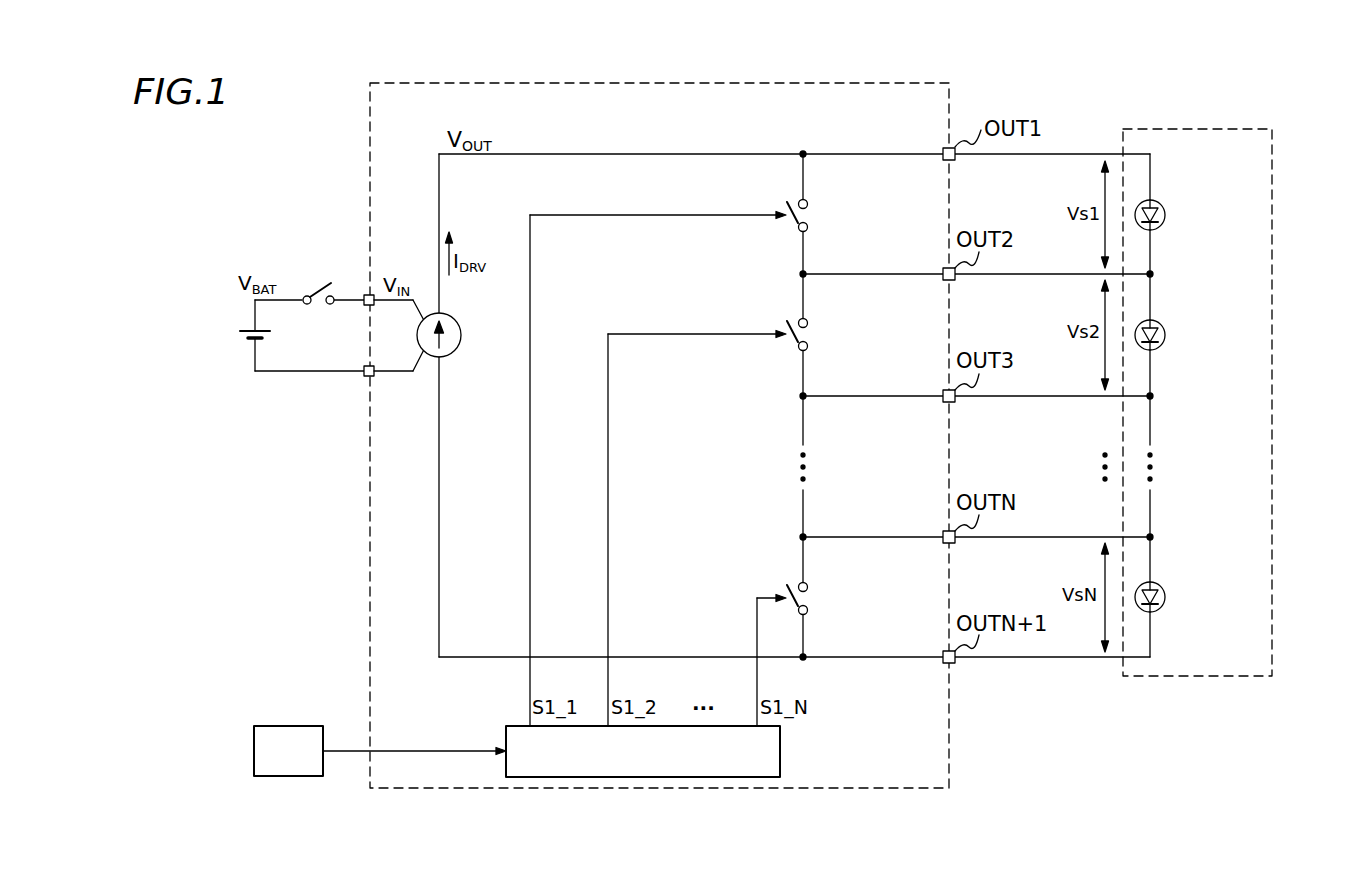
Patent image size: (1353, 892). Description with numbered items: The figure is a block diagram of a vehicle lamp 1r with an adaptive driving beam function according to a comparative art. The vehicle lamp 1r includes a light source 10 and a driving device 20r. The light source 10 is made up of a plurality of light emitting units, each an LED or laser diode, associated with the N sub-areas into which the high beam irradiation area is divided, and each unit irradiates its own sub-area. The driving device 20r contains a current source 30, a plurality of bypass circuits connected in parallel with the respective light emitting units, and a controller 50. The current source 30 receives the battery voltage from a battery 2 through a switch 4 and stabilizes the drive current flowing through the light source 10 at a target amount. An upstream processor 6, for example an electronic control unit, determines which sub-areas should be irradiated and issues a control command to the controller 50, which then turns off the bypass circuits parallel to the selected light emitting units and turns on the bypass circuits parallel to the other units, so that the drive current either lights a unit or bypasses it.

The vehicle lamp 1r is at (1232, 110).
The battery 2 is at (237, 335).
The switch 4 is at (317, 283).
The processor 6 is at (288, 725).
The light source 10 is at (1273, 162).
The driving device 20r is at (693, 790).
The current source 30 is at (458, 354).
The controller 50 is at (782, 750).